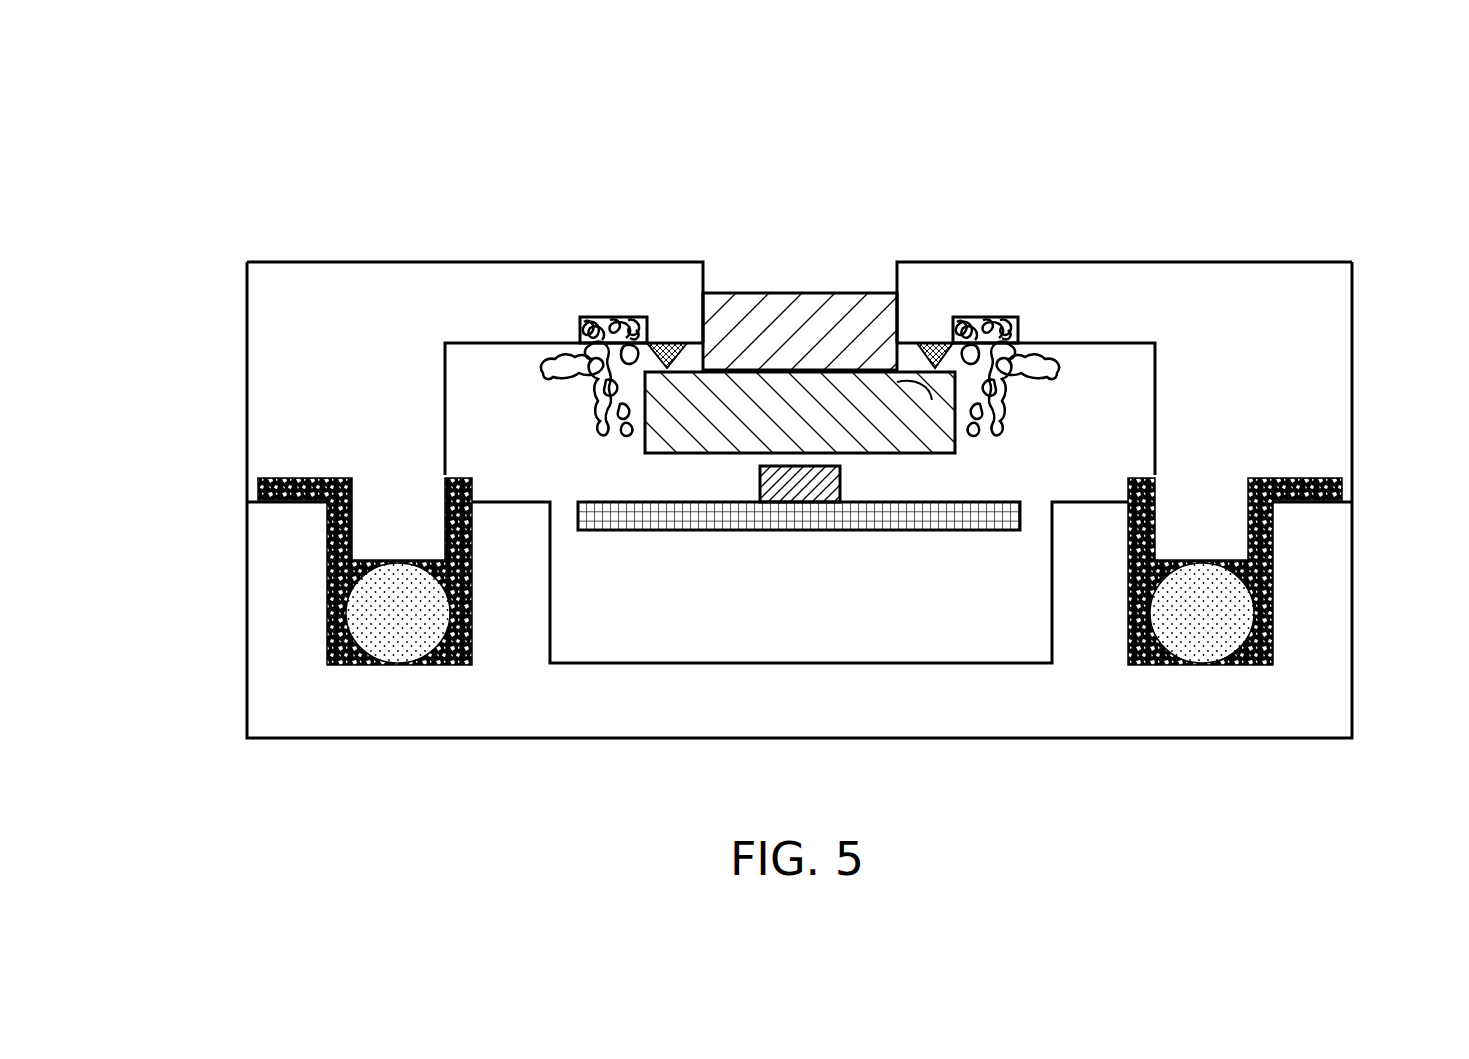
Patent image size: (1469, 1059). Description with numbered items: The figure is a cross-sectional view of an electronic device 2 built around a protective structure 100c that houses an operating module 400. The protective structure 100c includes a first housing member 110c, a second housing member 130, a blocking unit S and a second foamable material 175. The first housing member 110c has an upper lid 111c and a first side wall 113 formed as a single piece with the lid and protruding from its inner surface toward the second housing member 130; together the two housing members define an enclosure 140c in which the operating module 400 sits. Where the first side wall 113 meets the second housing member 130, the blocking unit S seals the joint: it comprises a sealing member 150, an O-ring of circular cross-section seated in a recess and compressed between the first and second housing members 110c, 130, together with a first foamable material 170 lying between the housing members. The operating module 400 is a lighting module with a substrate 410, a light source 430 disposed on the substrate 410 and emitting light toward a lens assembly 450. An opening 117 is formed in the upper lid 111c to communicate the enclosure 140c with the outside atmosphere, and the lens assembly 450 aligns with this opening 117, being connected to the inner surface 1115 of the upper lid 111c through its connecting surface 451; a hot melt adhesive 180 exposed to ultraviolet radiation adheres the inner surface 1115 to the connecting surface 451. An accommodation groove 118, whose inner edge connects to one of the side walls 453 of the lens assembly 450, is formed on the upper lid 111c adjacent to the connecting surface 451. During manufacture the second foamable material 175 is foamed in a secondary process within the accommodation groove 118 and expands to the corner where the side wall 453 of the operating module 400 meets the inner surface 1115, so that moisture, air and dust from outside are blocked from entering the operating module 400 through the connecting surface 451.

The electronic device 2 is at (212, 89).
The protective structure 100c is at (223, 228).
The first housing member 110c is at (247, 405).
The upper lid 111c is at (1340, 302).
The first side wall 113 is at (1340, 405).
The inner surface 1115 is at (1087, 343).
The opening 117 is at (840, 272).
The accommodation groove 118 is at (610, 335).
The hot melt adhesive 180 is at (670, 352).
The second foamable material 175 is at (548, 352).
The second housing member 130 is at (247, 662).
The enclosure 140c is at (763, 640).
The blocking unit S is at (158, 465).
The first foamable material 170 is at (258, 492).
The sealing member 150 is at (370, 606).
The operating module 400 is at (448, 802).
The lens assembly 450 is at (702, 433).
The connecting surface 451 is at (897, 382).
The side wall 453 is at (957, 442).
The substrate 410 is at (623, 522).
The light source 430 is at (773, 485).